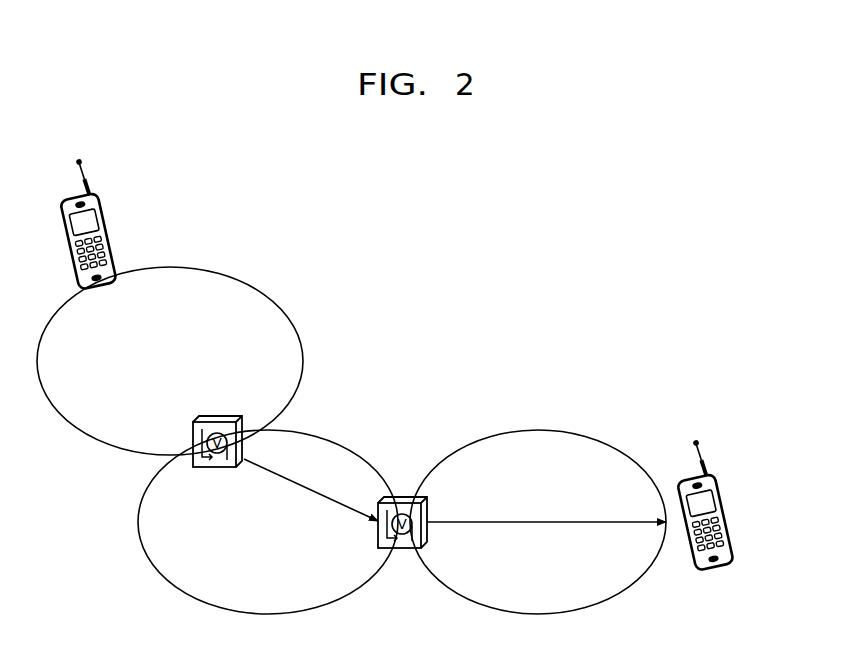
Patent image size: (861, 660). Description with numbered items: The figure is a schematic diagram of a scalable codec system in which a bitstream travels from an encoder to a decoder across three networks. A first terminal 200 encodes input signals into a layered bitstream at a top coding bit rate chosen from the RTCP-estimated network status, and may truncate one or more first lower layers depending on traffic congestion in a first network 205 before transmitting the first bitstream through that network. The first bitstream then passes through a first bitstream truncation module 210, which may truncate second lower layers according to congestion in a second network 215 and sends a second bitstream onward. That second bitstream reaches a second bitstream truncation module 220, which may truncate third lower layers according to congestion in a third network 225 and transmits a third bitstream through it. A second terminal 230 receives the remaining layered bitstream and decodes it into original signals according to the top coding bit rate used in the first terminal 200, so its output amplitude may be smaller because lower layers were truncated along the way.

The first terminal 200 is at (102, 201).
The first network 205 is at (173, 266).
The first bitstream truncation module 210 is at (217, 421).
The second network 215 is at (310, 432).
The second bitstream truncation module 220 is at (400, 498).
The third network 225 is at (543, 429).
The second terminal 230 is at (718, 485).